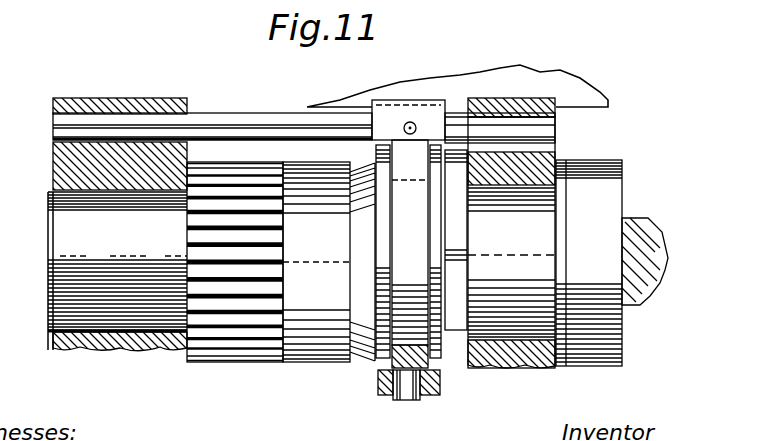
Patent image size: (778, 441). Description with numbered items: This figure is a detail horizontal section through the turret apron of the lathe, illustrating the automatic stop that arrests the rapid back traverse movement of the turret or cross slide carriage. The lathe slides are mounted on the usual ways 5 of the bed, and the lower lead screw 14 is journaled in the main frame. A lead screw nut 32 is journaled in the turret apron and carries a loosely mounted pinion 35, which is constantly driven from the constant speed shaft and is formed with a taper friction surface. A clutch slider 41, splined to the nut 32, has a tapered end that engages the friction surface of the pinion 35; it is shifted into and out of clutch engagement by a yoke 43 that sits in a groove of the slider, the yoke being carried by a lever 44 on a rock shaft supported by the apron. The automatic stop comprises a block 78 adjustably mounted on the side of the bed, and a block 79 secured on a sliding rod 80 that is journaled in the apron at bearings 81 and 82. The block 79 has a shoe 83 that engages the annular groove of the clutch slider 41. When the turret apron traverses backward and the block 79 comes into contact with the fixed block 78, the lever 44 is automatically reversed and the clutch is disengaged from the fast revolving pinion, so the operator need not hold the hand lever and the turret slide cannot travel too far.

The ways 5 is at (560, 90).
The lead screw 14 is at (636, 220).
The lead screw nut 32 is at (622, 160).
The pinion 35 is at (248, 362).
The slider 41 is at (386, 275).
The yoke 43 is at (420, 356).
The lever 44 is at (384, 396).
The block 78 is at (497, 186).
The block 79 is at (408, 195).
The sliding rod 80 is at (268, 113).
The bearing 81 is at (108, 98).
The bearing 82 is at (512, 94).
The shoe 83 is at (413, 180).